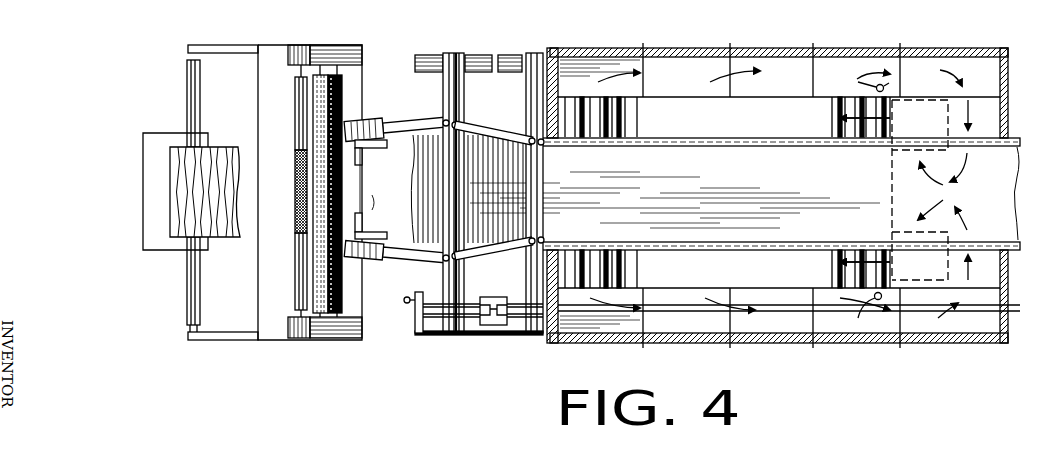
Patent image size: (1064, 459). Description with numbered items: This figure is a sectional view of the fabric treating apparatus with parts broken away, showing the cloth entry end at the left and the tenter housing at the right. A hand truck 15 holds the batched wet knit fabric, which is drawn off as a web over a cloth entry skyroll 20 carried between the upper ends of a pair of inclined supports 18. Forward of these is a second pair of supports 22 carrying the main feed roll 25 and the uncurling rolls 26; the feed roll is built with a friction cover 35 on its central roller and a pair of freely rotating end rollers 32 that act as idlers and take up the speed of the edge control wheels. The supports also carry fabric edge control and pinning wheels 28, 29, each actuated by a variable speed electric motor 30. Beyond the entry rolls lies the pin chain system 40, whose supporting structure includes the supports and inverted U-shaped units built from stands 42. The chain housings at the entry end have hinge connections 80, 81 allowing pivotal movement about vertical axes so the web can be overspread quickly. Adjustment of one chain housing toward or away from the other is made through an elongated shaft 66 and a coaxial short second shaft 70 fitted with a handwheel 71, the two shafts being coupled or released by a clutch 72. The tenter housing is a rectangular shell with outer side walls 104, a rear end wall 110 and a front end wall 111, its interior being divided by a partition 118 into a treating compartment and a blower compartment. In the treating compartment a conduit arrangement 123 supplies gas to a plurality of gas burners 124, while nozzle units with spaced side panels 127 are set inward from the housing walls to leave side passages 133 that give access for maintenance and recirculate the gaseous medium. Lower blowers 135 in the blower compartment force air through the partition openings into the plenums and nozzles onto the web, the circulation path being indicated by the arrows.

The hand truck 15 is at (143, 176).
The inclined supports 18 is at (230, 45).
The cloth entry skyroll 20 is at (187, 95).
The second pair of supports 22 is at (322, 45).
The main feed roll 25 is at (313, 80).
The uncurling rolls 26 is at (342, 290).
The fabric edge control and pinning wheel 28 is at (370, 148).
The fabric edge control and pinning wheel 29 is at (373, 180).
The variable speed electric motors 30 is at (378, 124).
The end rollers 32 is at (295, 119).
The cover 35 is at (295, 185).
The pin chain system 40 is at (650, 150).
The stands 42 is at (455, 53).
The elongated shaft 66 is at (805, 314).
The second shaft 70 is at (440, 335).
The handwheel 71 is at (415, 312).
The clutch 72 is at (485, 298).
The hinge connection 80 is at (538, 144).
The hinge connection 81 is at (443, 122).
The outer side walls 104 is at (672, 46).
The rear end wall 110 is at (549, 54).
The front end wall 111 is at (1008, 85).
The partition 118 is at (886, 192).
The conduit arrangement 123 is at (902, 66).
The gas burners 124 is at (857, 197).
The side panels 127 is at (655, 97).
The side passages 133 is at (790, 50).
The lower blowers 135 is at (920, 90).